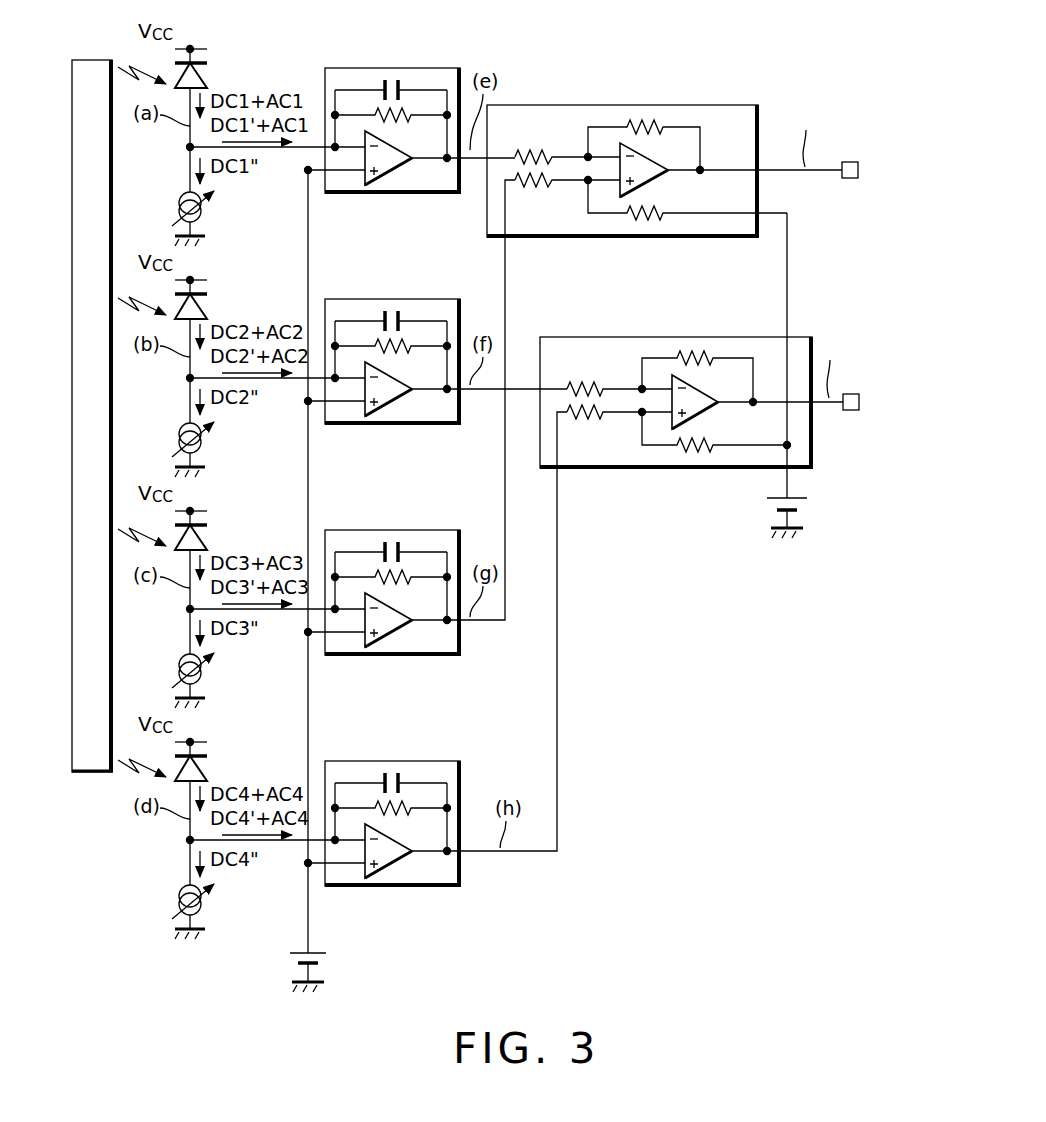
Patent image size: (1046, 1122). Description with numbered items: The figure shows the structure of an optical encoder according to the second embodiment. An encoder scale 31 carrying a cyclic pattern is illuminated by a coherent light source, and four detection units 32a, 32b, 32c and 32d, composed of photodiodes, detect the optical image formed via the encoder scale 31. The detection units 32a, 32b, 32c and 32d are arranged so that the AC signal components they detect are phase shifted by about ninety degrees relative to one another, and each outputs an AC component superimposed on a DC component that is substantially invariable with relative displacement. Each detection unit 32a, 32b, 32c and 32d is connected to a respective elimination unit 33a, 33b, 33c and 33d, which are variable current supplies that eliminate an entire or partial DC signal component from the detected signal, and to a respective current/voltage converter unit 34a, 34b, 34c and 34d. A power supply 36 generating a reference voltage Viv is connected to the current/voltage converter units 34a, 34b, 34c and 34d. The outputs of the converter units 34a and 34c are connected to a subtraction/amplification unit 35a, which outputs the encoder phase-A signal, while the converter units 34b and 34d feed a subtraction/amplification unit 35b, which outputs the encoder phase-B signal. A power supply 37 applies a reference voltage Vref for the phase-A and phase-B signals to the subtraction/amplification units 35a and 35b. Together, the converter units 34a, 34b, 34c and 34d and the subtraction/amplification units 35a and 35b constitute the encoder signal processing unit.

The encoder scale 31 is at (93, 60).
The detection unit 32a is at (210, 72).
The detection unit 32b is at (188, 318).
The detection unit 32c is at (187, 549).
The detection unit 32d is at (188, 780).
The elimination unit 33a is at (212, 212).
The elimination unit 33b is at (223, 427).
The elimination unit 33c is at (222, 658).
The elimination unit 33d is at (223, 889).
The current/voltage converter unit 34a is at (426, 68).
The current/voltage converter unit 34b is at (384, 335).
The current/voltage converter unit 34c is at (383, 566).
The current/voltage converter unit 34d is at (384, 797).
The subtraction/amplification unit 35a is at (694, 105).
The subtraction/amplification unit 35b is at (692, 337).
The power supply 36 is at (290, 955).
The power supply 37 is at (766, 504).